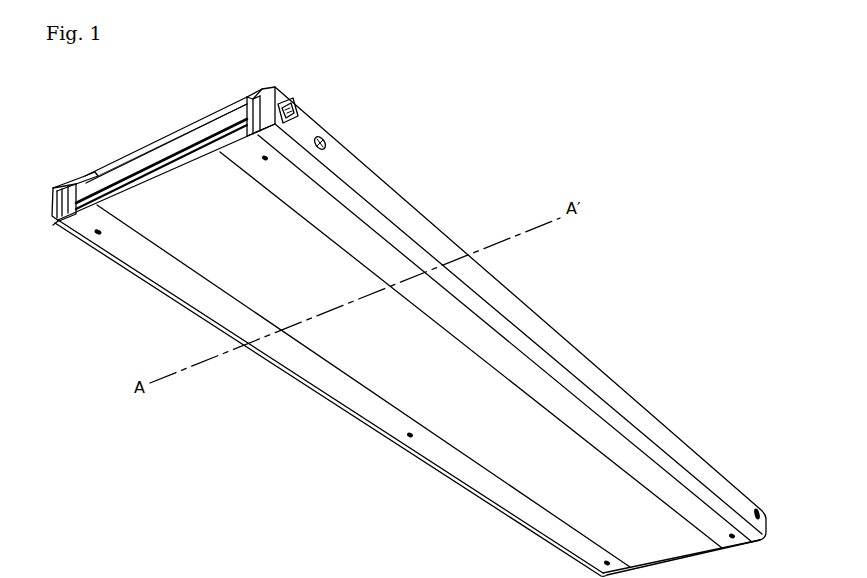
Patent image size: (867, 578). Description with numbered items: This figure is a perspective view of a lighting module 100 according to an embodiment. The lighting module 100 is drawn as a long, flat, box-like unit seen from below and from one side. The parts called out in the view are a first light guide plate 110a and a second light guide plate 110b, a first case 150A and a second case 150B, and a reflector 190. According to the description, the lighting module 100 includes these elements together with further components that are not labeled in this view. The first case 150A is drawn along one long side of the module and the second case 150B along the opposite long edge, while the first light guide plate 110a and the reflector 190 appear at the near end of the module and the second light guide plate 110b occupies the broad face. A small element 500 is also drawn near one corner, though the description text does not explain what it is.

The lighting module 100 is at (708, 112).
The first light guide plate 110a is at (155, 146).
The second light guide plate 110b is at (173, 200).
The first case 150A is at (383, 193).
The second case 150B is at (173, 296).
The reflector 190 is at (206, 135).
The connector 500 is at (294, 103).